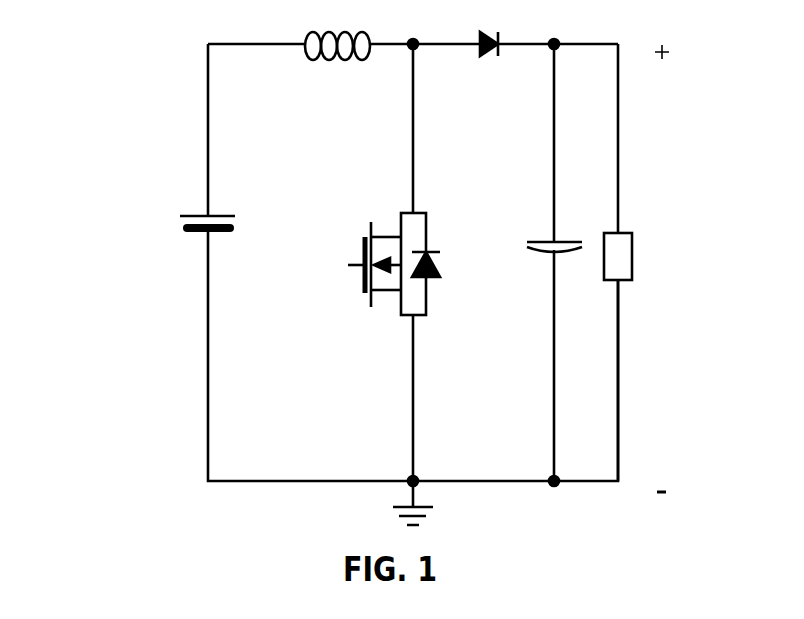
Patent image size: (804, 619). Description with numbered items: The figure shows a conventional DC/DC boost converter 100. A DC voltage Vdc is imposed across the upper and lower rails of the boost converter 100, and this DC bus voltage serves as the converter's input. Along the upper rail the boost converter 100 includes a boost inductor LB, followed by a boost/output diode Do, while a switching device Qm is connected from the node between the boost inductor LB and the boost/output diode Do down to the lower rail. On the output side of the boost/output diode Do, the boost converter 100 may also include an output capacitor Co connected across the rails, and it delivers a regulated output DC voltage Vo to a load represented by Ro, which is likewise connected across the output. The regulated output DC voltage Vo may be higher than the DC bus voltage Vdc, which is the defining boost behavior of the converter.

The boost converter 100 is at (156, 60).
The boost inductor LB is at (326, 69).
The boost/output diode Do is at (480, 71).
The DC voltage Vdc is at (190, 192).
The switching device Qm is at (376, 284).
The output capacitor Co is at (537, 276).
The load Ro is at (600, 285).
The regulated output DC voltage Vo is at (652, 380).